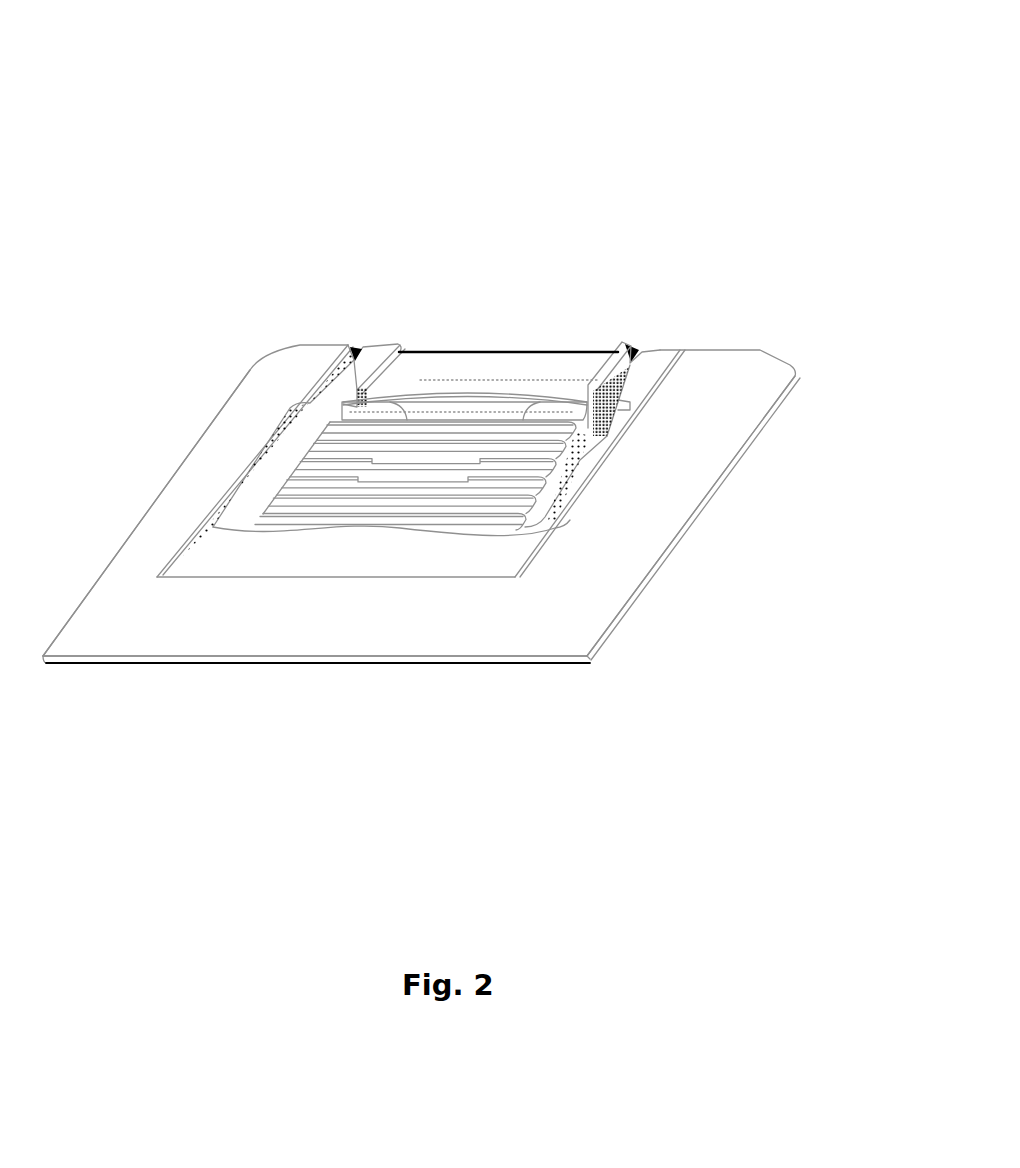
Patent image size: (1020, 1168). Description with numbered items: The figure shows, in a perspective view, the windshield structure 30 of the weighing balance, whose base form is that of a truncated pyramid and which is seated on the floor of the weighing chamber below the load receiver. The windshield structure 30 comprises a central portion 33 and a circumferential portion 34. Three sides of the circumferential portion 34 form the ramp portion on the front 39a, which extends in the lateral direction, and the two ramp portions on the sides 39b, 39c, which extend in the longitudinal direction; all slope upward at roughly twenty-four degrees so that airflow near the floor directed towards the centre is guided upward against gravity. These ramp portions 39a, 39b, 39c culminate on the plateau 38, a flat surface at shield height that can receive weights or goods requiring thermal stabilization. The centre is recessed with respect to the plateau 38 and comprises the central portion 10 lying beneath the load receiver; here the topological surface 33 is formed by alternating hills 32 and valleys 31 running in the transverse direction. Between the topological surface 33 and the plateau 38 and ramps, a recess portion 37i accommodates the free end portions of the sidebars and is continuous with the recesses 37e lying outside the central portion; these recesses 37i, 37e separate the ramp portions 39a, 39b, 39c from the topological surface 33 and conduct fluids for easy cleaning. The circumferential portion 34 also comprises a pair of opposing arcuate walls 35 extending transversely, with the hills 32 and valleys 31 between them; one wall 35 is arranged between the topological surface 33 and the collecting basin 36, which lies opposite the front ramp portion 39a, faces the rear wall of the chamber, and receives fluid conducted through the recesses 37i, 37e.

The windshield structure 30 is at (702, 118).
The central portion 10 is at (510, 338).
The valleys 31 is at (564, 460).
The hills 32 is at (318, 438).
The topological surface 33 is at (384, 499).
The circumferential portion 34 is at (250, 370).
The walls 35 is at (512, 393).
The collecting basin 36 is at (455, 363).
The recesses 37e is at (366, 358).
The recess portion 37i is at (273, 475).
The plateau 38 is at (492, 565).
The ramp portion on the front 39a is at (362, 636).
The ramp portion on the side 39b is at (671, 502).
The ramp portion on the side 39c is at (176, 519).